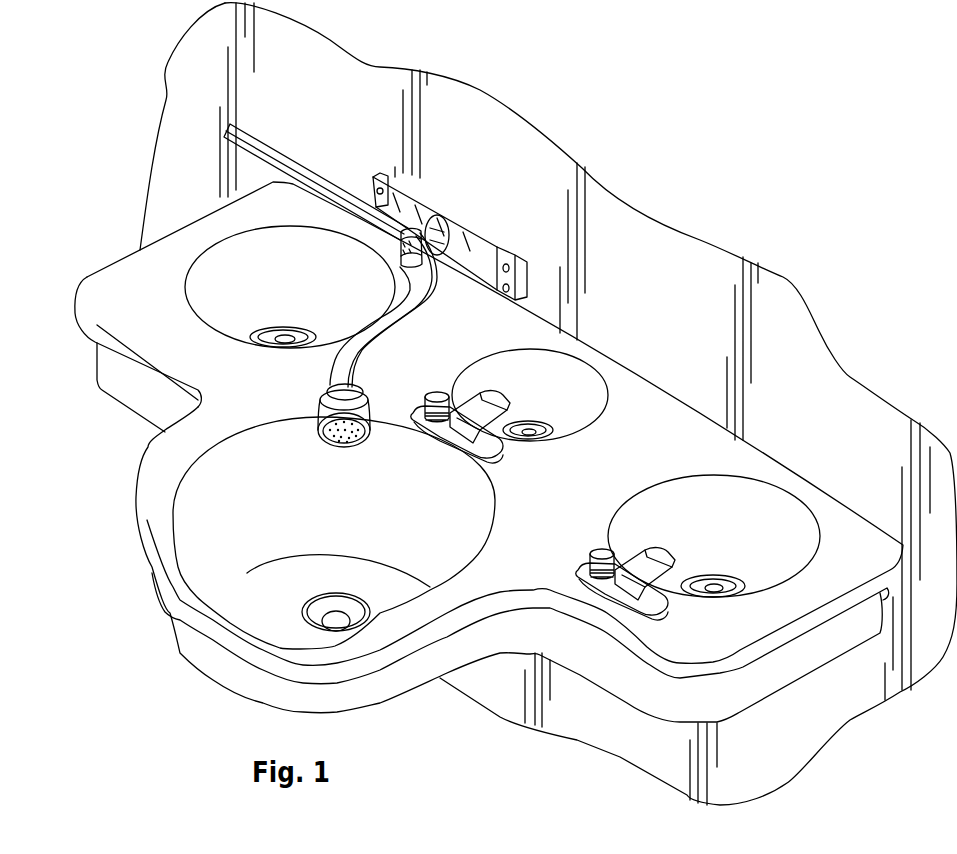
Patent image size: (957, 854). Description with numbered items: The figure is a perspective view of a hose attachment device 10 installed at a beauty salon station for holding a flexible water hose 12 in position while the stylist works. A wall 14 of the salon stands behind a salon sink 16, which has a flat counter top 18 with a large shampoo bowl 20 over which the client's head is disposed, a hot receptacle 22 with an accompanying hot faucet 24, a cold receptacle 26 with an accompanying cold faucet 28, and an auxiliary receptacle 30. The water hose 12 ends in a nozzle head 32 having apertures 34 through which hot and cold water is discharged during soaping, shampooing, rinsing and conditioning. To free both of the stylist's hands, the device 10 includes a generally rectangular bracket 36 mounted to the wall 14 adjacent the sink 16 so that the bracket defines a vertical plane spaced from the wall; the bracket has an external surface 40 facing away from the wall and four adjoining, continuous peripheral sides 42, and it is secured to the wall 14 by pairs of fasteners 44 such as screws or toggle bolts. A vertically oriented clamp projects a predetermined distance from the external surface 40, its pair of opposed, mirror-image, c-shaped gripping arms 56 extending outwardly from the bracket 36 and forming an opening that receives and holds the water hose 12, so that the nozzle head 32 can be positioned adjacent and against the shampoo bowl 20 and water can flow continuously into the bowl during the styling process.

The hose attachment device 10 is at (532, 160).
The water hose 12 is at (308, 166).
The wall 14 is at (878, 392).
The salon sink 16 is at (843, 497).
The counter top 18 is at (128, 294).
The shampoo bowl 20 is at (175, 570).
The hot receptacle 22 is at (580, 420).
The hot faucet 24 is at (457, 428).
The cold receptacle 26 is at (820, 540).
The cold faucet 28 is at (618, 602).
The auxiliary receptacle 30 is at (190, 277).
The nozzle head 32 is at (318, 413).
The apertures 34 is at (338, 446).
The bracket 36 is at (383, 176).
The external surface 40 is at (482, 256).
The peripheral sides 42 is at (527, 275).
The fasteners 44 is at (370, 193).
The gripping arms 56 is at (403, 268).